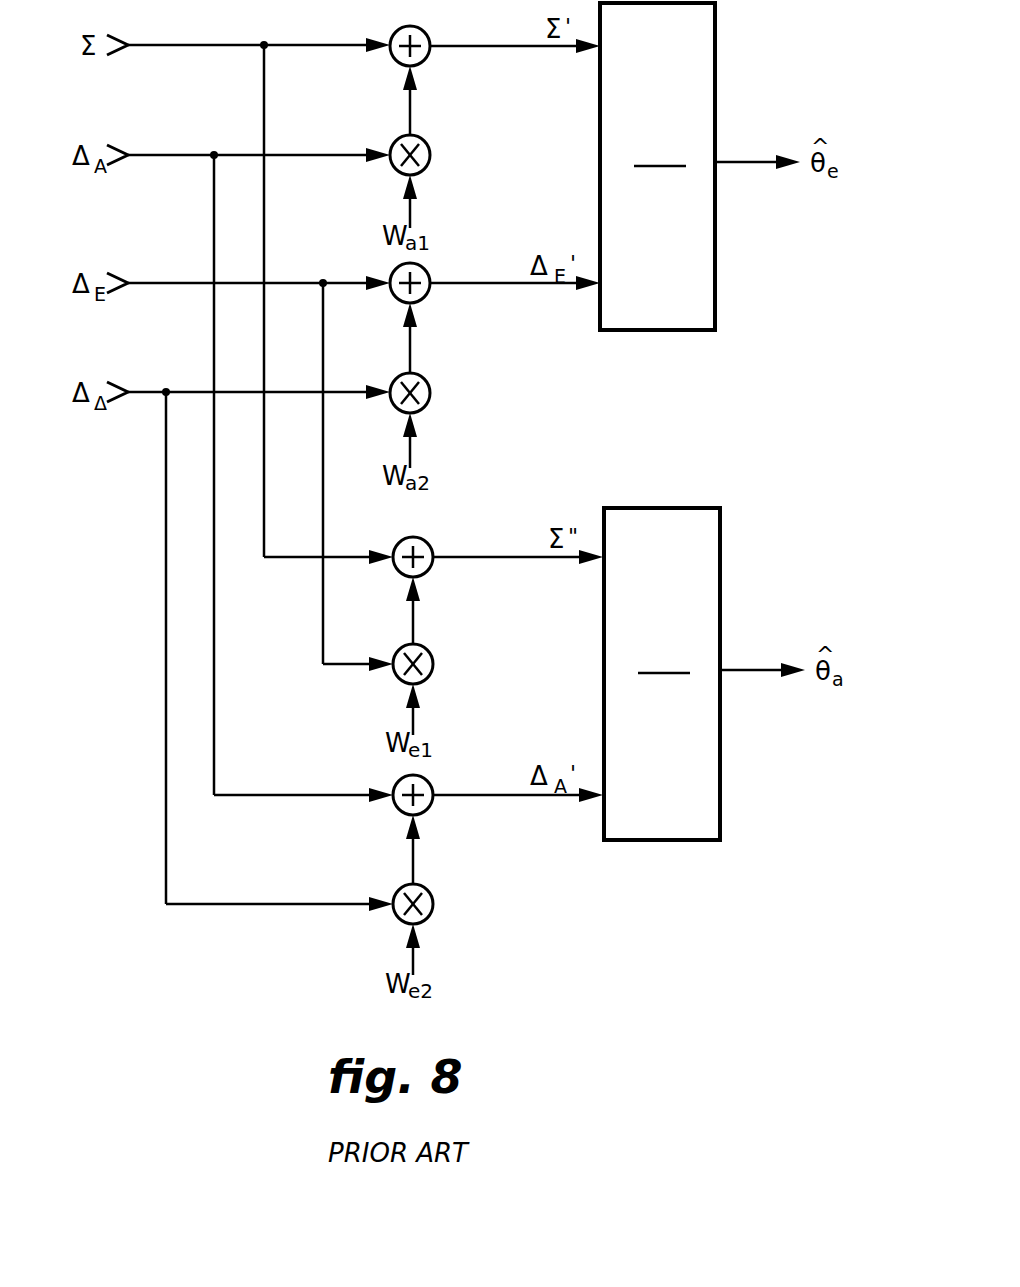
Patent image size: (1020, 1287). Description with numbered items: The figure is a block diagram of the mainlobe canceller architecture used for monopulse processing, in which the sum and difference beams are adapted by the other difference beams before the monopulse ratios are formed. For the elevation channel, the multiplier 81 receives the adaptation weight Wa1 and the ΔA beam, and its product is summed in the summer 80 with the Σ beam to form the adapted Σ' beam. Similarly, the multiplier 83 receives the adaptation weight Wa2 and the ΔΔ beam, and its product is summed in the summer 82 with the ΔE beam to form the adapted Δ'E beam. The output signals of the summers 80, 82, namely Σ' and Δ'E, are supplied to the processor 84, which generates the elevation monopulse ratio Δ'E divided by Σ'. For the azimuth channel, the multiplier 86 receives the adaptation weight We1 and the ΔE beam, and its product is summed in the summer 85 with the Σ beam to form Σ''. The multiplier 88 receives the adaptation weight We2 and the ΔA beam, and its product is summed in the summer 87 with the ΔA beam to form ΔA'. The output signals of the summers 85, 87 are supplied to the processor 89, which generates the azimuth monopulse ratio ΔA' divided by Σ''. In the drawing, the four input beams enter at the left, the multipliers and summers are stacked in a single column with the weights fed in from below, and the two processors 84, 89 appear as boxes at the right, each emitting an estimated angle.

The summer 80 is at (427, 56).
The multiplier 81 is at (427, 165).
The summer 82 is at (427, 293).
The multiplier 83 is at (428, 402).
The processor 84 is at (715, 35).
The summer 85 is at (430, 567).
The multiplier 86 is at (431, 674).
The summer 87 is at (430, 805).
The multiplier 88 is at (432, 913).
The processor 89 is at (720, 762).